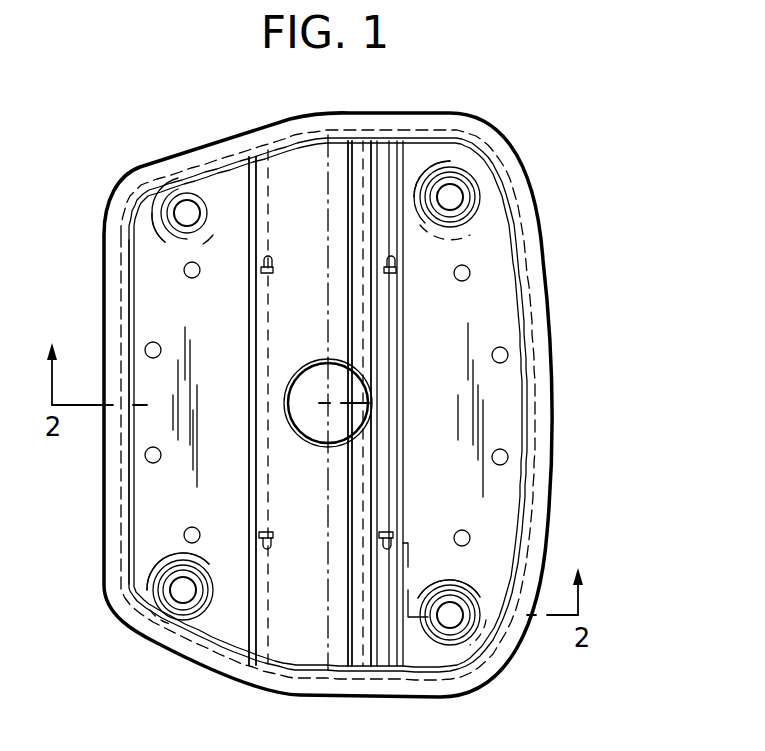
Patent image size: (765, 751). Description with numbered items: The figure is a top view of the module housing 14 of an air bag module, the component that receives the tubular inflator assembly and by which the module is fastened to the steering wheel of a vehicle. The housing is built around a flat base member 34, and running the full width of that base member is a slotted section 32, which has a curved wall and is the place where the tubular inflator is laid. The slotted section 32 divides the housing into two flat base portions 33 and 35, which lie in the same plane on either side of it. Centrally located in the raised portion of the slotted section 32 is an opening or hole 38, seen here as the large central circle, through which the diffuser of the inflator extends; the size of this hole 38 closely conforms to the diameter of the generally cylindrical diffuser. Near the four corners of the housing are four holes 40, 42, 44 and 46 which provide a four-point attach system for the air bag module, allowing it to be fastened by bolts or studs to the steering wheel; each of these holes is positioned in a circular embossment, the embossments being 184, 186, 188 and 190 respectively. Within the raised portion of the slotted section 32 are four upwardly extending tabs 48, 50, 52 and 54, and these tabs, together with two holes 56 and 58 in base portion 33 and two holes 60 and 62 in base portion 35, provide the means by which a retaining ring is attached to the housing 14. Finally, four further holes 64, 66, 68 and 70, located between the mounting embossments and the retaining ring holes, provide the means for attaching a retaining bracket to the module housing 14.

The module housing 14 is at (566, 226).
The slotted section 32 is at (333, 157).
The base portion 33 is at (143, 268).
The flat base member 34 is at (143, 522).
The base portion 35 is at (497, 283).
The opening or hole 38 is at (307, 366).
The hole 40 is at (172, 207).
The hole 42 is at (180, 600).
The hole 44 is at (456, 197).
The hole 46 is at (457, 617).
The upwardly extending tab 48 is at (271, 549).
The upwardly extending tab 50 is at (381, 549).
The upwardly extending tab 52 is at (273, 258).
The upwardly extending tab 54 is at (386, 259).
The hole 56 is at (161, 351).
The hole 58 is at (161, 457).
The hole 60 is at (492, 355).
The hole 62 is at (492, 458).
The hole 64 is at (196, 278).
The hole 66 is at (197, 528).
The hole 68 is at (456, 280).
The hole 70 is at (454, 533).
The circular embossment 184 is at (190, 180).
The circular embossment 186 is at (200, 610).
The circular embossment 188 is at (470, 167).
The circular embossment 190 is at (437, 630).